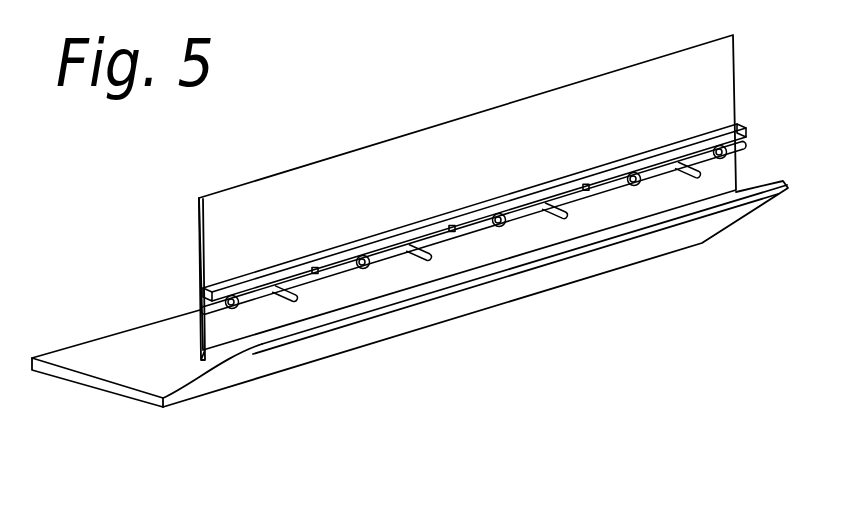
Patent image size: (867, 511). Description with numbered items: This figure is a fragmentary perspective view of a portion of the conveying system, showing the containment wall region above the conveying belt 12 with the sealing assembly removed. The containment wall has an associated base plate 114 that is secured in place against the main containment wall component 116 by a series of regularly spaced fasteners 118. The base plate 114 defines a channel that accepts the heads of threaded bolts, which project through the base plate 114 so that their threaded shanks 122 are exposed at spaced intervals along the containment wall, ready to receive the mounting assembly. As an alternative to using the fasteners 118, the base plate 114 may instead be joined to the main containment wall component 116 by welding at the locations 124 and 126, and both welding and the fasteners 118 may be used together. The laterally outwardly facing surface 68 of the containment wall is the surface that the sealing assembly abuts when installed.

The conveying belt 12 is at (112, 350).
The laterally outwardly facing surface 68 is at (210, 327).
The base plate 114 is at (505, 197).
The main containment wall component 116 is at (303, 188).
The fasteners 118 is at (227, 297).
The threaded shanks 122 is at (421, 245).
The welding location 124 is at (208, 290).
The welding location 126 is at (238, 342).